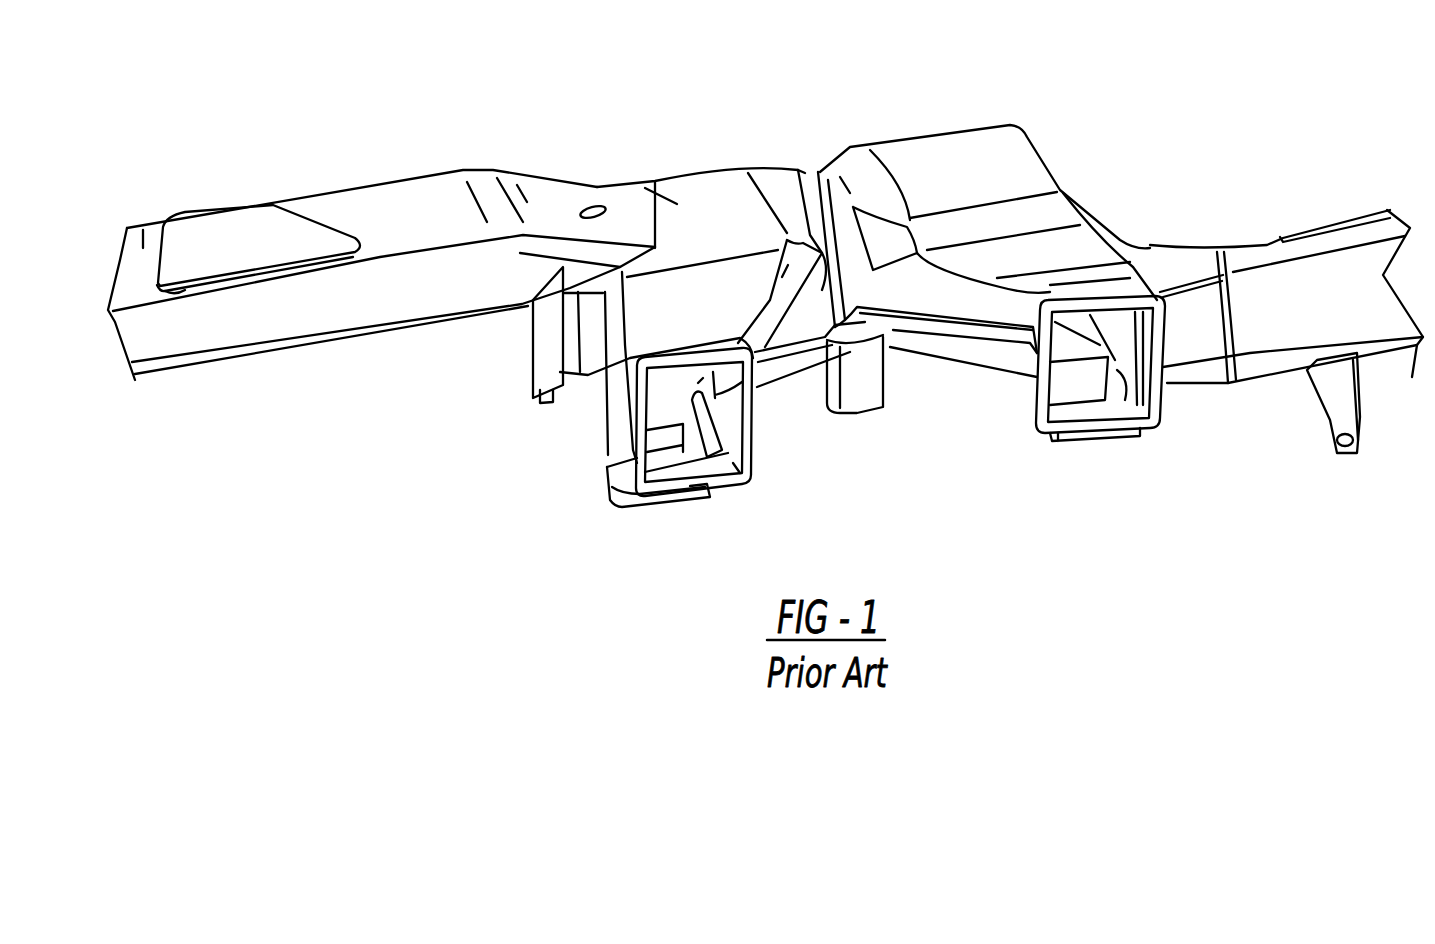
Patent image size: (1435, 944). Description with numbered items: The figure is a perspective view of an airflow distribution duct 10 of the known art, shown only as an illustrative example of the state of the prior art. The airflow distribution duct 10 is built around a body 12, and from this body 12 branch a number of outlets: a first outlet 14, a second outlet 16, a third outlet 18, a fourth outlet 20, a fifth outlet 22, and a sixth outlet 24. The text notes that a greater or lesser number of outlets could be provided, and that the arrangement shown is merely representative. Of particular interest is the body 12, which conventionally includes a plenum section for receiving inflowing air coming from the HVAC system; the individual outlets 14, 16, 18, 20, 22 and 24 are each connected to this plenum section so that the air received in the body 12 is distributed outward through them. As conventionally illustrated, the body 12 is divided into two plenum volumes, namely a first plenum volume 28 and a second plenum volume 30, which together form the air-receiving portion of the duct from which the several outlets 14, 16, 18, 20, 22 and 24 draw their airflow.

The airflow distribution duct 10 is at (410, 80).
The body 12 is at (716, 185).
The first outlet 14 is at (145, 237).
The second outlet 16 is at (723, 417).
The third outlet 18 is at (607, 500).
The fourth outlet 20 is at (1130, 393).
The fifth outlet 22 is at (1088, 440).
The sixth outlet 24 is at (1367, 298).
The first plenum volume 28 is at (660, 176).
The second plenum volume 30 is at (958, 148).